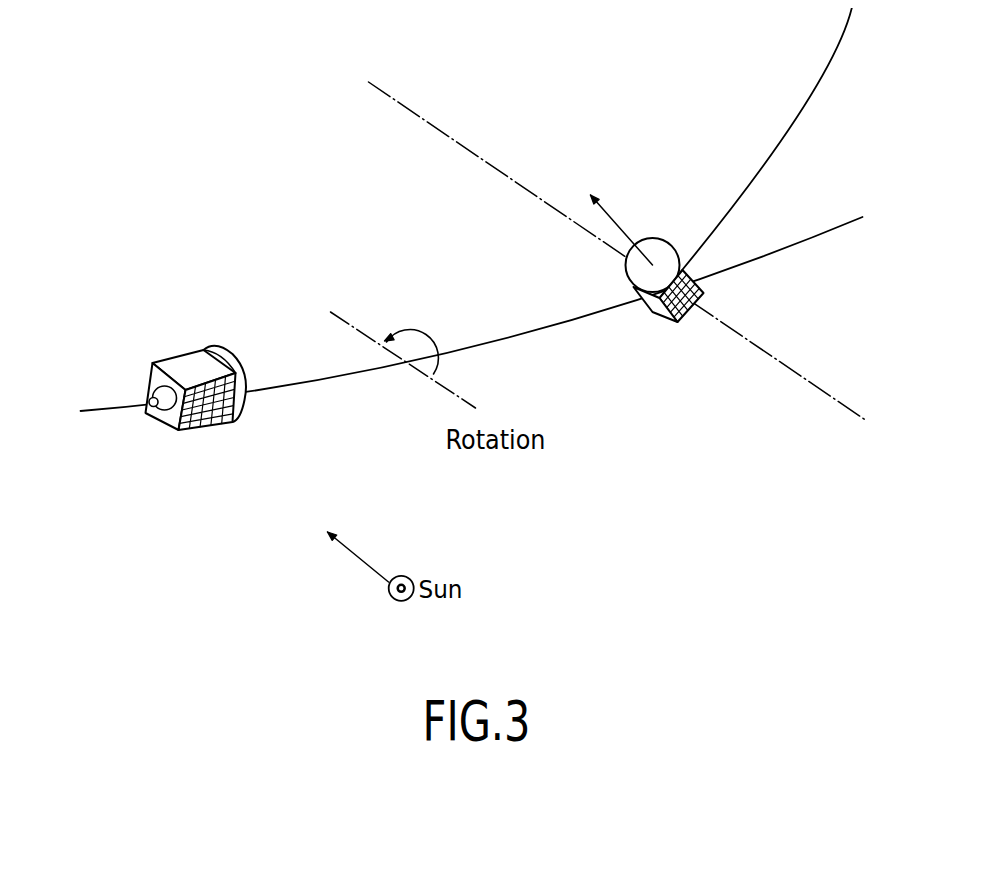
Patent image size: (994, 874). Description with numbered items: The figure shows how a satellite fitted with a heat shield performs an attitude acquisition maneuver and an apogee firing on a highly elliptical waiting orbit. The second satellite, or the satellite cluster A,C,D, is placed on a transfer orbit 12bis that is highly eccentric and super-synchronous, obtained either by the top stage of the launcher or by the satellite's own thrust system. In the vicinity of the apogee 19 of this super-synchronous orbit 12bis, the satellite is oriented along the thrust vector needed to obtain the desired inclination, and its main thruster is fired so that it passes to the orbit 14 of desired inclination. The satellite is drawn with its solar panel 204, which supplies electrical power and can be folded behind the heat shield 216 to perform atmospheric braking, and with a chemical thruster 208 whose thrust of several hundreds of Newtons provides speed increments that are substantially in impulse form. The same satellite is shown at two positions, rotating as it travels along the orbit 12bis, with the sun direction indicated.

The transfer orbit 12bis is at (547, 328).
The orbit of desired inclination 14 is at (803, 107).
The apogee 19 is at (697, 280).
The solar panel 204 is at (211, 433).
The thruster 208 is at (153, 411).
The heat shield 216 is at (223, 349).
The satellites A,C,D is at (365, 391).